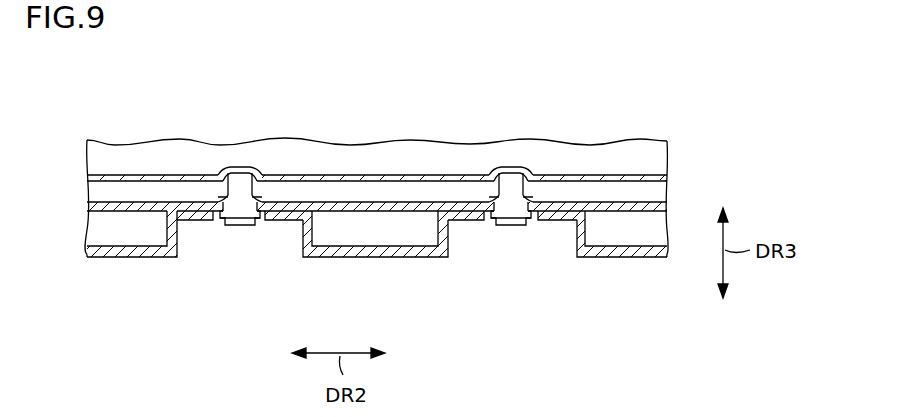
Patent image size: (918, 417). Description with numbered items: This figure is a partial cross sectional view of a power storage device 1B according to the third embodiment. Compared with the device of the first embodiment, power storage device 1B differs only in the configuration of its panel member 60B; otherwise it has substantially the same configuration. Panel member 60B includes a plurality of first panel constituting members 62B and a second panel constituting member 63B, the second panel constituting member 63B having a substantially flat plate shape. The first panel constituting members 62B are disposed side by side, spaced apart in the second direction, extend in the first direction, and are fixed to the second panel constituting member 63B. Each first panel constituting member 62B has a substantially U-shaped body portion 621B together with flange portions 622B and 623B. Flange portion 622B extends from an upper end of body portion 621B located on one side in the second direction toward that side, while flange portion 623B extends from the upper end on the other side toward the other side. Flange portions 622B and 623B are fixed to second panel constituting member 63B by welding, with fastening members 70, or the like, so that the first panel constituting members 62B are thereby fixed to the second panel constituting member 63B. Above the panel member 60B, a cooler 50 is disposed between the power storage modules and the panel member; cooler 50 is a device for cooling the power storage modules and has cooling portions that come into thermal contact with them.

The power storage device 1B is at (638, 130).
The cooler 50 is at (512, 167).
The panel member 60B is at (360, 267).
The first panel constituting member 62B is at (127, 258).
The second panel constituting member 63B is at (377, 176).
The fastening member 70 is at (233, 227).
The body portion 621B is at (410, 258).
The flange portion 622B is at (287, 221).
The flange portion 623B is at (470, 221).